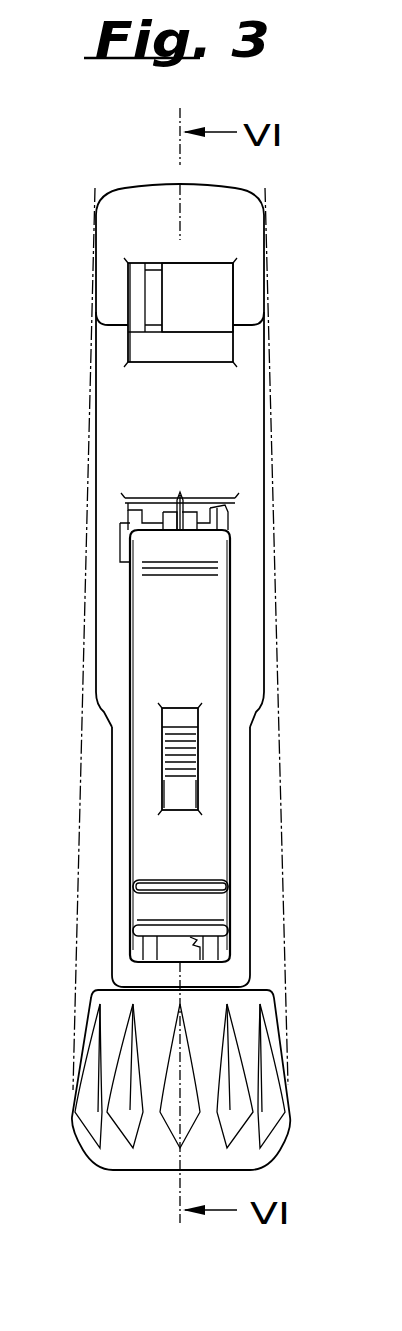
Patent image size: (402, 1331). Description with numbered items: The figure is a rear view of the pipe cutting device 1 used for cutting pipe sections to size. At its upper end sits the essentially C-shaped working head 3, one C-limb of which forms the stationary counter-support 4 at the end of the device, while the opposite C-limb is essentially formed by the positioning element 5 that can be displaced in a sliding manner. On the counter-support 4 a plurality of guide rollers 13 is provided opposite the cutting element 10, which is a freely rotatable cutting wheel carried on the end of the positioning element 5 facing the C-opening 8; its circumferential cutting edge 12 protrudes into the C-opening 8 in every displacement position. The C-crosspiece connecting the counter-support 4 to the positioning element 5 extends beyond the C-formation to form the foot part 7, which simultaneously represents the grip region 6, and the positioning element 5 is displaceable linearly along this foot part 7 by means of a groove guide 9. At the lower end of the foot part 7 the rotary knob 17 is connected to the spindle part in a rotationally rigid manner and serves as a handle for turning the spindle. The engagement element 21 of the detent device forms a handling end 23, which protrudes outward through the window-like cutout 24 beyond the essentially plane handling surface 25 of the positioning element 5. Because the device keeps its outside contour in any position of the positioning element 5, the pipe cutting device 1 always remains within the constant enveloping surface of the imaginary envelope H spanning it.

The pipe cutting device 1 is at (293, 175).
The working head 3 is at (212, 394).
The counter-support 4 is at (118, 274).
The positioning element 5 is at (206, 636).
The grip region 6 is at (242, 805).
The foot part 7 is at (238, 857).
The C-opening 8 is at (190, 432).
The groove guide 9 is at (220, 512).
The cutting element 10 is at (237, 504).
The cutting edge 12 is at (181, 493).
The guide rollers 13 is at (192, 297).
The rotary knob 17 is at (150, 1077).
The engagement element 21 is at (186, 749).
The handling end 23 is at (178, 794).
The window-like cutout 24 is at (162, 743).
The handling surface 25 is at (180, 653).
The envelope H is at (78, 926).